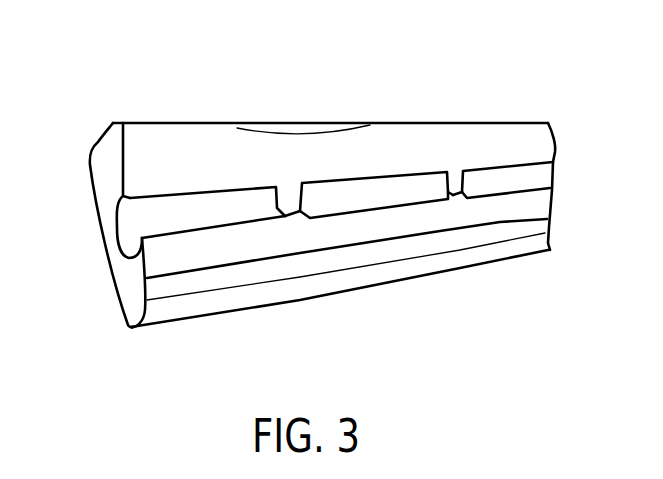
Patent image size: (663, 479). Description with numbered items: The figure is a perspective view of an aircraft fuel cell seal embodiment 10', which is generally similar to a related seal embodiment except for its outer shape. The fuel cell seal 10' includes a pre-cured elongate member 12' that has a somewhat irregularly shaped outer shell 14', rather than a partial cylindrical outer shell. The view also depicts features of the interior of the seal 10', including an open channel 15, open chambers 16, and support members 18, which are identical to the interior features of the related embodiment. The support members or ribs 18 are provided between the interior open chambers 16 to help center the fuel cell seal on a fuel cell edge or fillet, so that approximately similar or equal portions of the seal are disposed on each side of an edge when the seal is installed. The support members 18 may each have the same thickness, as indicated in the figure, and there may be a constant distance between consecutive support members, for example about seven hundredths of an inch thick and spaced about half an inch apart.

The aircraft fuel cell seal embodiment 10' is at (288, 197).
The pre-cured elongate member 12' is at (298, 225).
The outer shell 14' is at (339, 297).
The open channel 15 is at (92, 258).
The open chambers 16 is at (198, 208).
The support members 18 is at (291, 213).